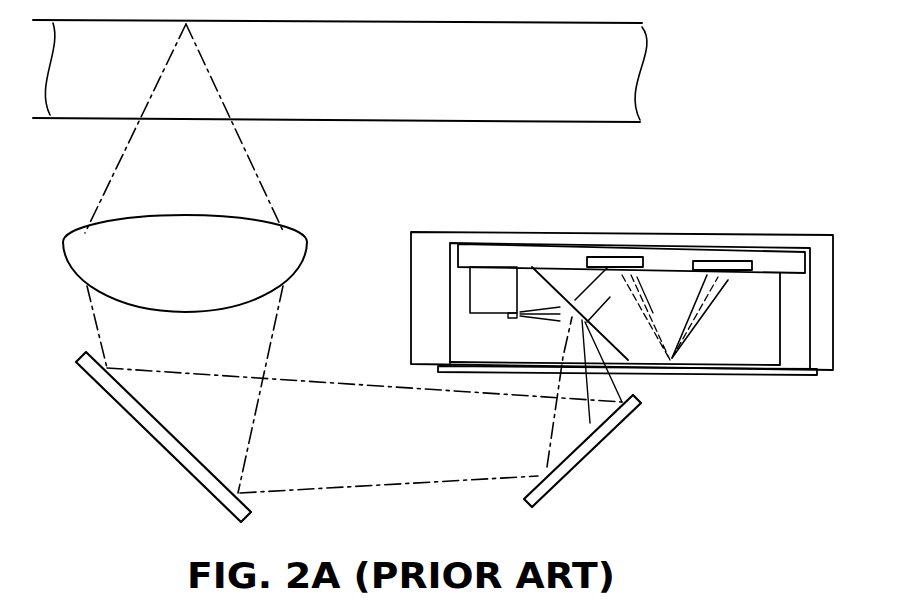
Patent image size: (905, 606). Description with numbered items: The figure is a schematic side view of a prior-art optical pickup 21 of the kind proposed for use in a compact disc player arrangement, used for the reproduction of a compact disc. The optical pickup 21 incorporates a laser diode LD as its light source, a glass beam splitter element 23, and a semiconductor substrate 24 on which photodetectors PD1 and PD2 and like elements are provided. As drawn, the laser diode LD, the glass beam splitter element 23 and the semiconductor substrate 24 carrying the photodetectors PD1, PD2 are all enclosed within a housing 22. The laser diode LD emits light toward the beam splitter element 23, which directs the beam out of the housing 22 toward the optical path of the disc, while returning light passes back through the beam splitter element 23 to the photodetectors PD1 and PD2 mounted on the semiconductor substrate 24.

The laser diode LD is at (515, 320).
The photodetector PD1 is at (595, 258).
The photodetector PD2 is at (712, 258).
The optical pickup 21 is at (740, 232).
The housing 22 is at (833, 288).
The glass beam splitter element 23 is at (725, 347).
The semiconductor substrate 24 is at (657, 258).